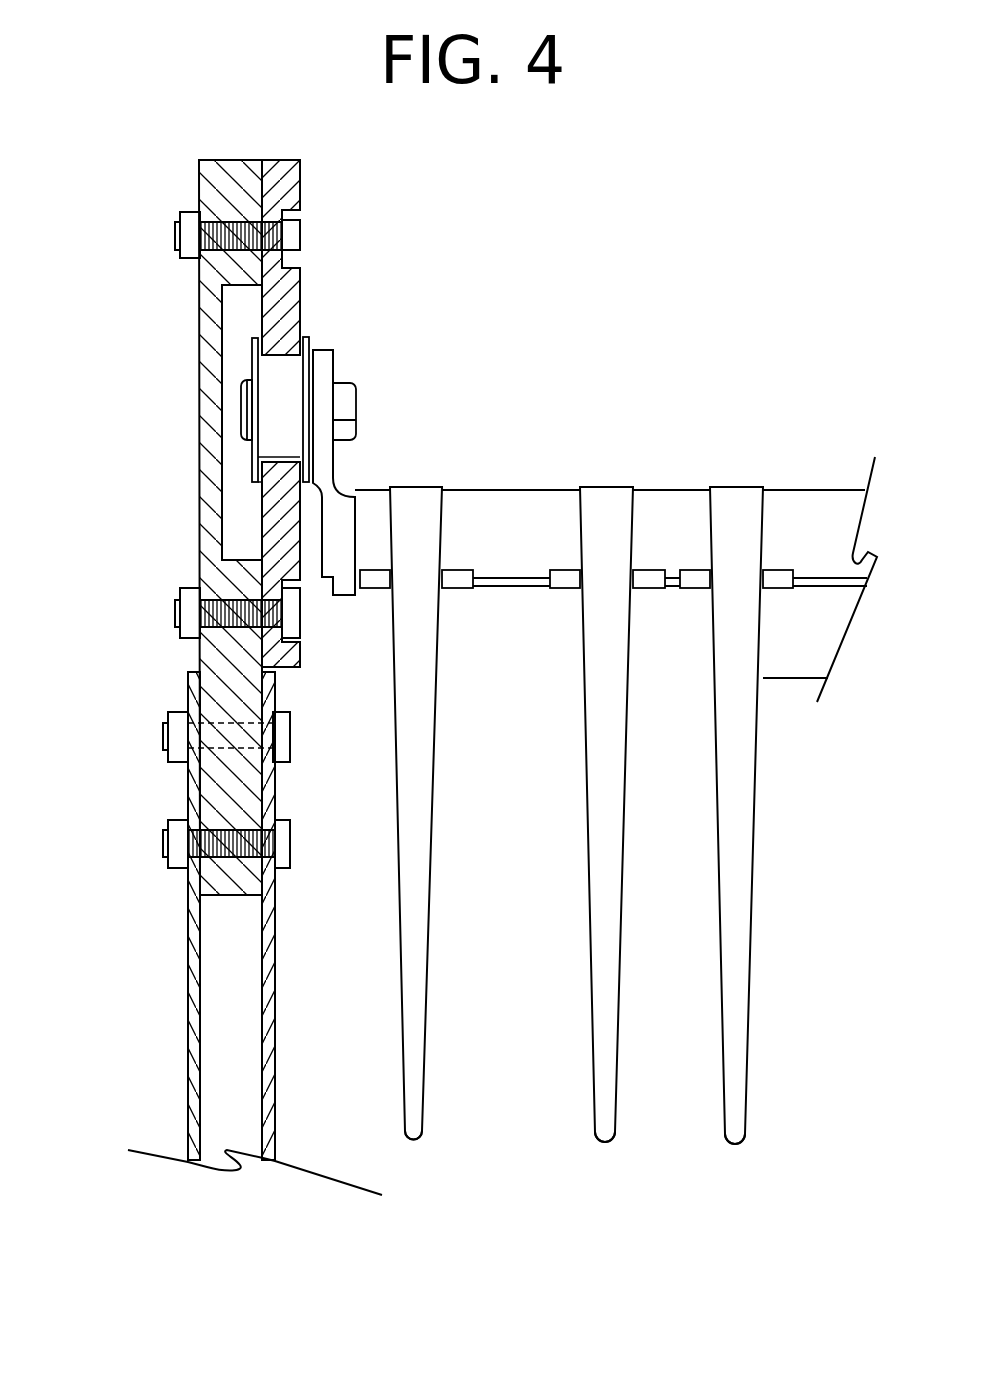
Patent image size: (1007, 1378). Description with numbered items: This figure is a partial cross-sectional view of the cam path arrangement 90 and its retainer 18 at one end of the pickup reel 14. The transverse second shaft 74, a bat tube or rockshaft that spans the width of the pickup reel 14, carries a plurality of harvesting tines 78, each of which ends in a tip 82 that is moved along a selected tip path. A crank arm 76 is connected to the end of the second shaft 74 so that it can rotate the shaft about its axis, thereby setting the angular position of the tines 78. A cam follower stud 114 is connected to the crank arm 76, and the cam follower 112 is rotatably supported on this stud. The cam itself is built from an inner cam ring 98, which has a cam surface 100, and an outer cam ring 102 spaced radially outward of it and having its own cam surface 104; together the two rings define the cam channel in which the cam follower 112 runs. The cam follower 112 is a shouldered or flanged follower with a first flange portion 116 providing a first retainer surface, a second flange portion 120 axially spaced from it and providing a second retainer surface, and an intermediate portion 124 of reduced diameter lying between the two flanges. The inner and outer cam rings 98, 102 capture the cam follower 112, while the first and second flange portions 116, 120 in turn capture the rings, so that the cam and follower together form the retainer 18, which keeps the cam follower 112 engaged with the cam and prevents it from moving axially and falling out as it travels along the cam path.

The pickup reel 14 is at (130, 591).
The cam path arrangement retainer 18 is at (280, 416).
The second shaft 74 is at (805, 490).
The crank arm 76 is at (348, 460).
The harvesting tines 78 is at (433, 832).
The tip 82 is at (412, 1142).
The cam path arrangement 90 is at (616, 736).
The inner cam ring 98 is at (283, 667).
The cam surface 100 is at (278, 458).
The outer cam ring 102 is at (300, 177).
The cam surface 104 is at (288, 362).
The cam follower 112 is at (240, 370).
The cam follower stud 114 is at (317, 397).
The first flange portion 116 is at (305, 438).
The second flange portion 120 is at (297, 467).
The intermediate portion 124 is at (272, 408).